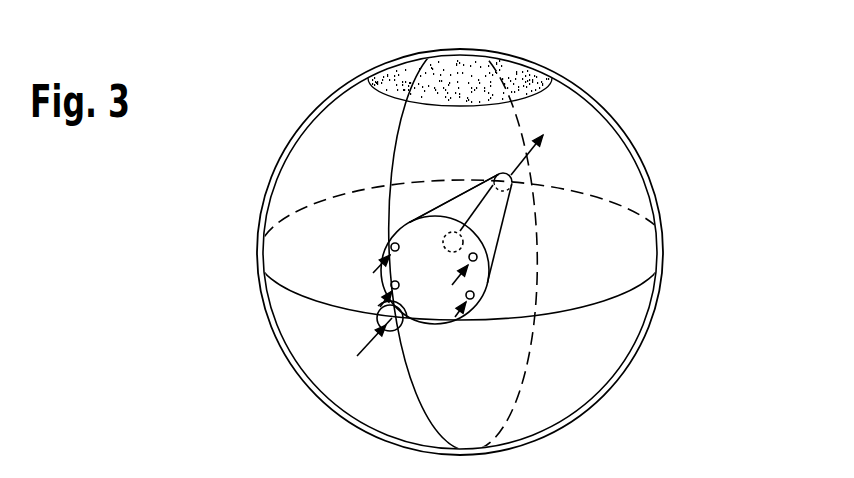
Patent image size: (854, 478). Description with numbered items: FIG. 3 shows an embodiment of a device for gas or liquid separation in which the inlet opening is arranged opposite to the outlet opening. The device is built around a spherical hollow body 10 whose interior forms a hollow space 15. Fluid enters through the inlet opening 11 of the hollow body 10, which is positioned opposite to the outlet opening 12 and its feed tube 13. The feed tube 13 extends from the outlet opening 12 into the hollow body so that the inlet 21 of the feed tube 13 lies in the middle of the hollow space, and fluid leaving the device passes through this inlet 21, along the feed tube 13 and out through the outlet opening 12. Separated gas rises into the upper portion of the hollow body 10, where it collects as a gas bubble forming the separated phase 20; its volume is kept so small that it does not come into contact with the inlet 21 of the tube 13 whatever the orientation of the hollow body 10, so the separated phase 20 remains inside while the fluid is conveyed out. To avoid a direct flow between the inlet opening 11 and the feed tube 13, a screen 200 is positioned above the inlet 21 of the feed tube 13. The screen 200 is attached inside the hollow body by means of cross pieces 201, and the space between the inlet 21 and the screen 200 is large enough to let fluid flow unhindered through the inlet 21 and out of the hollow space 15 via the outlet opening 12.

The hollow body 10 is at (641, 353).
The inlet opening 11 is at (377, 317).
The outlet opening 12 is at (513, 182).
The feed tube 13 is at (477, 224).
The hollow space 15 is at (328, 153).
The separated phase 20 is at (522, 78).
The inlet of the feed tube 21 is at (447, 252).
The screen 200 is at (470, 306).
The cross pieces 201 is at (452, 182).